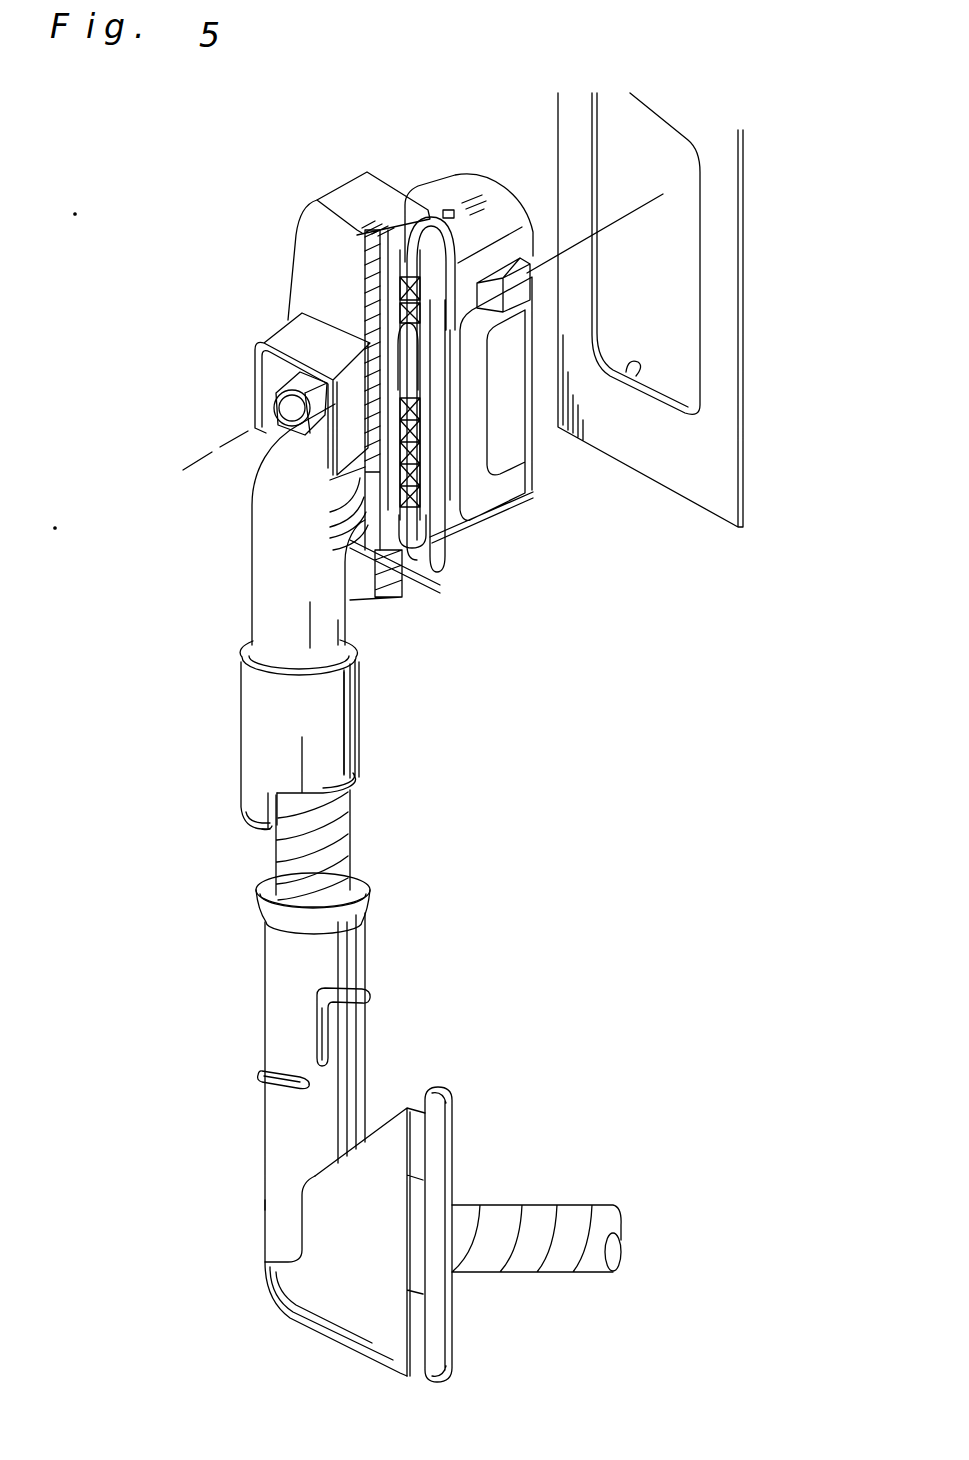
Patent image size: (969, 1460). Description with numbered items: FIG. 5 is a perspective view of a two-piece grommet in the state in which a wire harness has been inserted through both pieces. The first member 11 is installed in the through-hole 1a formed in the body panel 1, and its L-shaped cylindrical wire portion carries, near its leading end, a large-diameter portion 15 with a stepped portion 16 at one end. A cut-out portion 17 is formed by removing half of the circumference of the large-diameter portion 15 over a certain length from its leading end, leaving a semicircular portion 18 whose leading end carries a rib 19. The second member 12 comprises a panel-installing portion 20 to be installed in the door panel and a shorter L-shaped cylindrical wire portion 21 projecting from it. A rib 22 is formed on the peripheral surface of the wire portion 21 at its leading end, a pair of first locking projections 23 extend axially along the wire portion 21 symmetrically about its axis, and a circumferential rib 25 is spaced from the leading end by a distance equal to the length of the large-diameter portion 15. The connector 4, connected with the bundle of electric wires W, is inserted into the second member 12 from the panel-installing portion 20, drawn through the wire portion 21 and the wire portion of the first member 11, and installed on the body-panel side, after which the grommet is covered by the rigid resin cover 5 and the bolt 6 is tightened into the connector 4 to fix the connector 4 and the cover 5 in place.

The body panel 1 is at (688, 480).
The through-hole 1a is at (634, 372).
The connector 4 is at (493, 225).
The cover 5 is at (308, 252).
The bolt 6 is at (256, 418).
The first member 11 is at (237, 581).
The second member 12 is at (391, 1069).
The large-diameter portion 15 is at (241, 755).
The stepped portion 16 is at (242, 653).
The cut-out portion 17 is at (358, 767).
The semicircular portion 18 is at (260, 802).
The rib 19 is at (262, 833).
The panel-installing portion 20 is at (362, 982).
The wire portion 21 is at (282, 1158).
The rib 22 is at (365, 897).
The first locking projections 23 is at (317, 1028).
The rib 25 is at (262, 1075).
The electric wires W is at (335, 855).